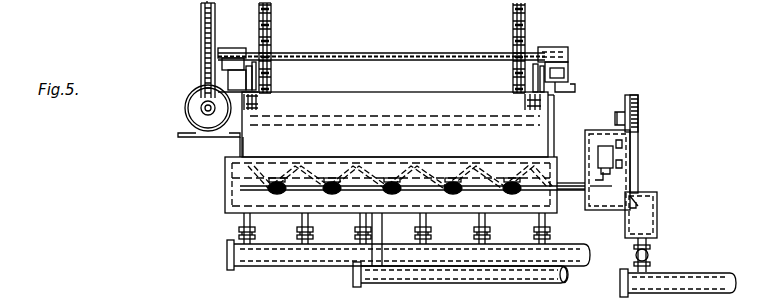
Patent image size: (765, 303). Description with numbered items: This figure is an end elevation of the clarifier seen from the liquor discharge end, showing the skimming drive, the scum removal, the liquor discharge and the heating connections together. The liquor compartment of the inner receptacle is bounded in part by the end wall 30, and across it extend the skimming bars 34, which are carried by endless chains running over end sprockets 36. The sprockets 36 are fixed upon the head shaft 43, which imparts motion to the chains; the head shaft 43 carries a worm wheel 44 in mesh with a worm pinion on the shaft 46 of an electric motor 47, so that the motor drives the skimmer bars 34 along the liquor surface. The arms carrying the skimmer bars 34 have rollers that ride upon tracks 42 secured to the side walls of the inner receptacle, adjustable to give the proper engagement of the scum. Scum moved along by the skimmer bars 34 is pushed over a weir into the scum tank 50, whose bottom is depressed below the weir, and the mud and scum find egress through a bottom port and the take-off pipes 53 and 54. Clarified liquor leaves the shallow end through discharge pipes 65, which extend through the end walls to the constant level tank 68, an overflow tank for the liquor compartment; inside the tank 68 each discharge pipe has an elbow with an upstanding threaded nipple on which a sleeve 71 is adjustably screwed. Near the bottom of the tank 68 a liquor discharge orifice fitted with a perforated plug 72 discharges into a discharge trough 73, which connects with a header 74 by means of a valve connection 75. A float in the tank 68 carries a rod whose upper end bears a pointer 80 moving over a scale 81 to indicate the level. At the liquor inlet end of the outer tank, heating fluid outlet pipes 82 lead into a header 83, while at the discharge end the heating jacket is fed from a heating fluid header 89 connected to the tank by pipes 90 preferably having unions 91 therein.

The end wall 30 is at (236, 186).
The skimming bars 34 is at (421, 128).
The end sprockets 36 is at (276, 12).
The tracks 42 is at (566, 82).
The head shaft 43 is at (426, 54).
The worm wheel 44 is at (203, 38).
The motor shaft 46 is at (203, 112).
The electric motor 47 is at (185, 108).
The scum tank 50 is at (344, 126).
The take-off pipe 53 is at (380, 232).
The take-off pipe 54 is at (562, 278).
The discharge pipes 65 is at (570, 184).
The constant level tank 68 is at (637, 162).
The sleeve 71 is at (603, 136).
The perforated plug 72 is at (638, 196).
The discharge trough 73 is at (658, 212).
The header 74 is at (710, 272).
The valve connection 75 is at (650, 252).
The pointer 80 is at (637, 110).
The scale 81 is at (637, 96).
The heating fluid outlet pipes 82 is at (309, 6).
The header 83 is at (182, 13).
The heating fluid header 89 is at (240, 262).
The pipes 90 is at (247, 222).
The unions 91 is at (302, 228).